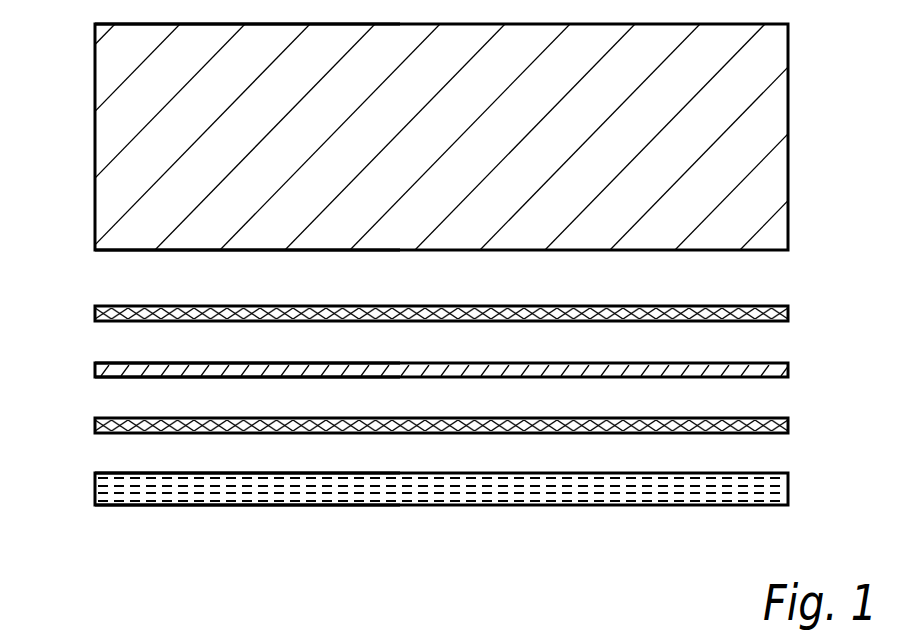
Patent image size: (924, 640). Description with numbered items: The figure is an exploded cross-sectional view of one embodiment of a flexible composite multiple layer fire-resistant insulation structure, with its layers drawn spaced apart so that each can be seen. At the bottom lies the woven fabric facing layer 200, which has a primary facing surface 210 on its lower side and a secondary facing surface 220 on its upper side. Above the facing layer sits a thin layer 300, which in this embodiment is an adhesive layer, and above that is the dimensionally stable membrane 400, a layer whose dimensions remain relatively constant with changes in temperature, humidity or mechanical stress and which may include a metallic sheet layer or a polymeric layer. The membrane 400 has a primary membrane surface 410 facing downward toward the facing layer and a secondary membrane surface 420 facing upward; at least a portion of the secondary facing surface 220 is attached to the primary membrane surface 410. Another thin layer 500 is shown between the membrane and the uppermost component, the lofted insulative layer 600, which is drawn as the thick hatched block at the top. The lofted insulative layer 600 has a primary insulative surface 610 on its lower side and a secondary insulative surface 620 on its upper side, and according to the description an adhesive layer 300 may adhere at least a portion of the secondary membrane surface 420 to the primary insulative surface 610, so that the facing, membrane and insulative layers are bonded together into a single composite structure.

The lofted insulative layer 600 is at (788, 72).
The secondary insulative surface 620 is at (95, 24).
The primary insulative surface 610 is at (95, 250).
The adhesive layer 500 is at (788, 313).
The dimensionally stable membrane 400 is at (788, 372).
The secondary membrane surface 420 is at (95, 363).
The primary membrane surface 410 is at (95, 377).
The adhesive layer 300 is at (788, 428).
The woven fabric facing layer 200 is at (788, 492).
The secondary facing surface 220 is at (95, 473).
The primary facing surface 210 is at (95, 505).